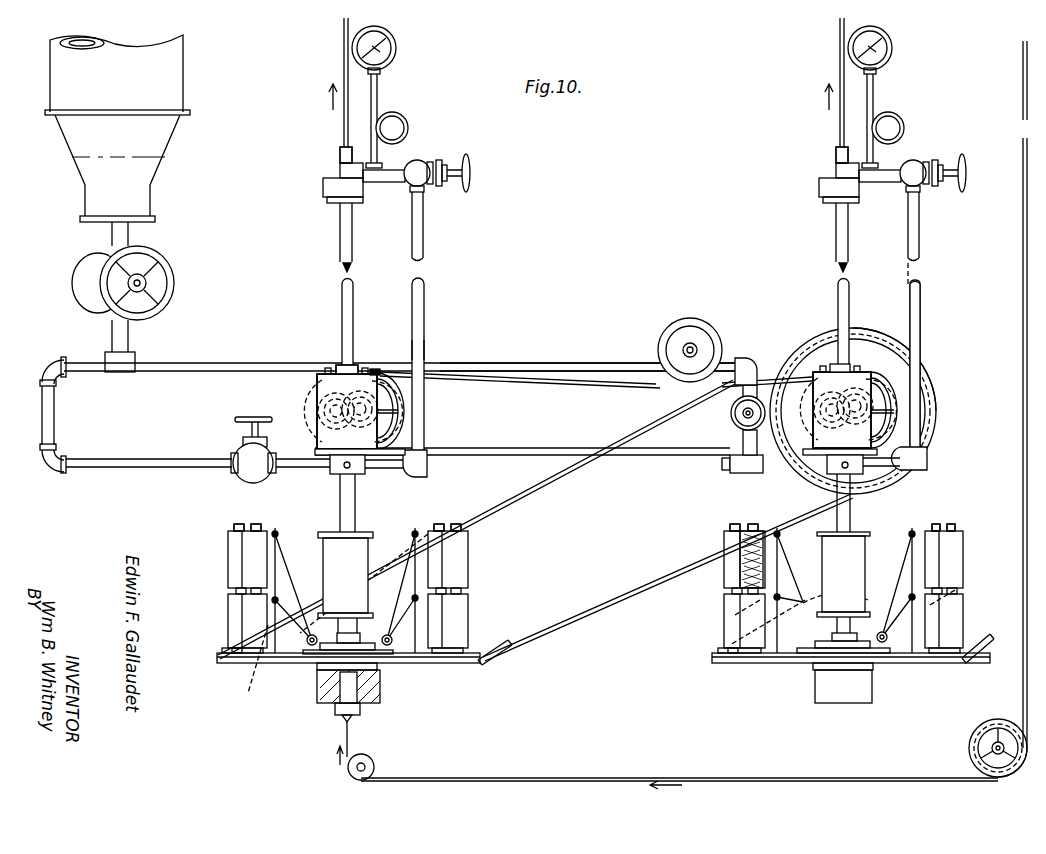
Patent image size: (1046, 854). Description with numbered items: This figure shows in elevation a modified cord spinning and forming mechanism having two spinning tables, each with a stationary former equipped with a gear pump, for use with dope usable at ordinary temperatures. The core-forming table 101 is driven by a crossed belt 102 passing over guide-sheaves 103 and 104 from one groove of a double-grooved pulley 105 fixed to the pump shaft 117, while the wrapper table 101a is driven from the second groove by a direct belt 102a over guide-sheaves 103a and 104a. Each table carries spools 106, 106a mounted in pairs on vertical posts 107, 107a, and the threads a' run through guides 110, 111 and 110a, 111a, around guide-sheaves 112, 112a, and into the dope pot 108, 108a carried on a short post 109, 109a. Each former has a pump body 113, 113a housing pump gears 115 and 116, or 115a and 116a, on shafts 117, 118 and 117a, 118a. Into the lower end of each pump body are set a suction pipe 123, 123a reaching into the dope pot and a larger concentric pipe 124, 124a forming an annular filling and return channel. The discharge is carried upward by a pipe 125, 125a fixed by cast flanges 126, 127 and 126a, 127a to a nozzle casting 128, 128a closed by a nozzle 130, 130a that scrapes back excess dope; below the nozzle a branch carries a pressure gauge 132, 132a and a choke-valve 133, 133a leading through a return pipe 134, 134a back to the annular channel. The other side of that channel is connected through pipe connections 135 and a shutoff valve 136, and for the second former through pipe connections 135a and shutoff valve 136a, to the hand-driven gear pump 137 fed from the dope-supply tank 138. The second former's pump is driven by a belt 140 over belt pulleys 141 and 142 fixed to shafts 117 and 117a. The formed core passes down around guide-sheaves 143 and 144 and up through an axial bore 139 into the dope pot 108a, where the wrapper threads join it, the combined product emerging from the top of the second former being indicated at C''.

The dope-supply tank 138 is at (165, 78).
The hand-driven gear pump 137 is at (76, 272).
The pipe connections 135a is at (124, 336).
The shutoff valve 136a is at (252, 464).
The pipe connections 135 is at (592, 362).
The belt 140 is at (585, 452).
The double-grooved pulley 105 is at (935, 402).
The belt pulley 141 is at (897, 422).
The shutoff valve 136 is at (731, 422).
The pump shaft 117 is at (924, 360).
The direct belt 102a is at (592, 610).
The crossed belt 102 is at (890, 494).
The pipe C'' is at (327, 90).
The pressure gauge 132a is at (397, 52).
The valve 133a is at (420, 165).
The fitting 130a is at (340, 154).
The header block 128a is at (346, 182).
The flange 127a is at (345, 196).
The pressure gauge 132 is at (887, 93).
The choke-valve 133 is at (915, 194).
The nozzle 130 is at (819, 151).
The nozzle casting 128 is at (823, 180).
The cast flange 127 is at (825, 233).
The pipe 125a is at (343, 296).
The pipe 134a is at (424, 294).
The shaft 117a is at (430, 350).
The bowl 116a is at (318, 409).
The bowl chamber 118a is at (318, 427).
The casing 113a is at (377, 425).
The belt pulley 142 is at (398, 412).
The cap 126a is at (341, 365).
The pump gear 115a is at (372, 368).
The pipe 123a is at (362, 500).
The pipe 124a is at (340, 493).
The pipe 125 is at (848, 306).
The return pipe 134 is at (923, 278).
The pump gear 116 is at (813, 413).
The shaft 118 is at (813, 392).
The pump body 113 is at (860, 402).
The pump gear 115 is at (918, 348).
The cast flange 126 is at (851, 365).
The pipe 123 is at (835, 500).
The pipe 124 is at (852, 512).
The table 101a is at (430, 664).
The guide-sheave 103a is at (500, 657).
The spools 106a is at (232, 612).
The cylinder caps 107a is at (232, 528).
The rod 110a is at (306, 530).
The links 111a is at (290, 600).
The dope-pot 108a is at (345, 575).
The post 109a is at (352, 636).
The guide-sheave 104a is at (224, 650).
The axial bore 139 is at (254, 670).
The block 112a is at (320, 663).
The core-forming table 101 is at (778, 660).
The guide-sheave 103 is at (978, 648).
The spools 106 is at (728, 618).
The vertical posts 107 is at (744, 525).
The guide 110 is at (779, 534).
The guide 111 is at (795, 600).
The threads a' is at (847, 596).
The dope pot 108 is at (843, 574).
The post 109 is at (836, 624).
The guide-sheave 104 is at (722, 652).
The guide-sheaves 112 is at (884, 644).
The guide-sheave 144 is at (373, 762).
The guide-sheave 143 is at (969, 752).